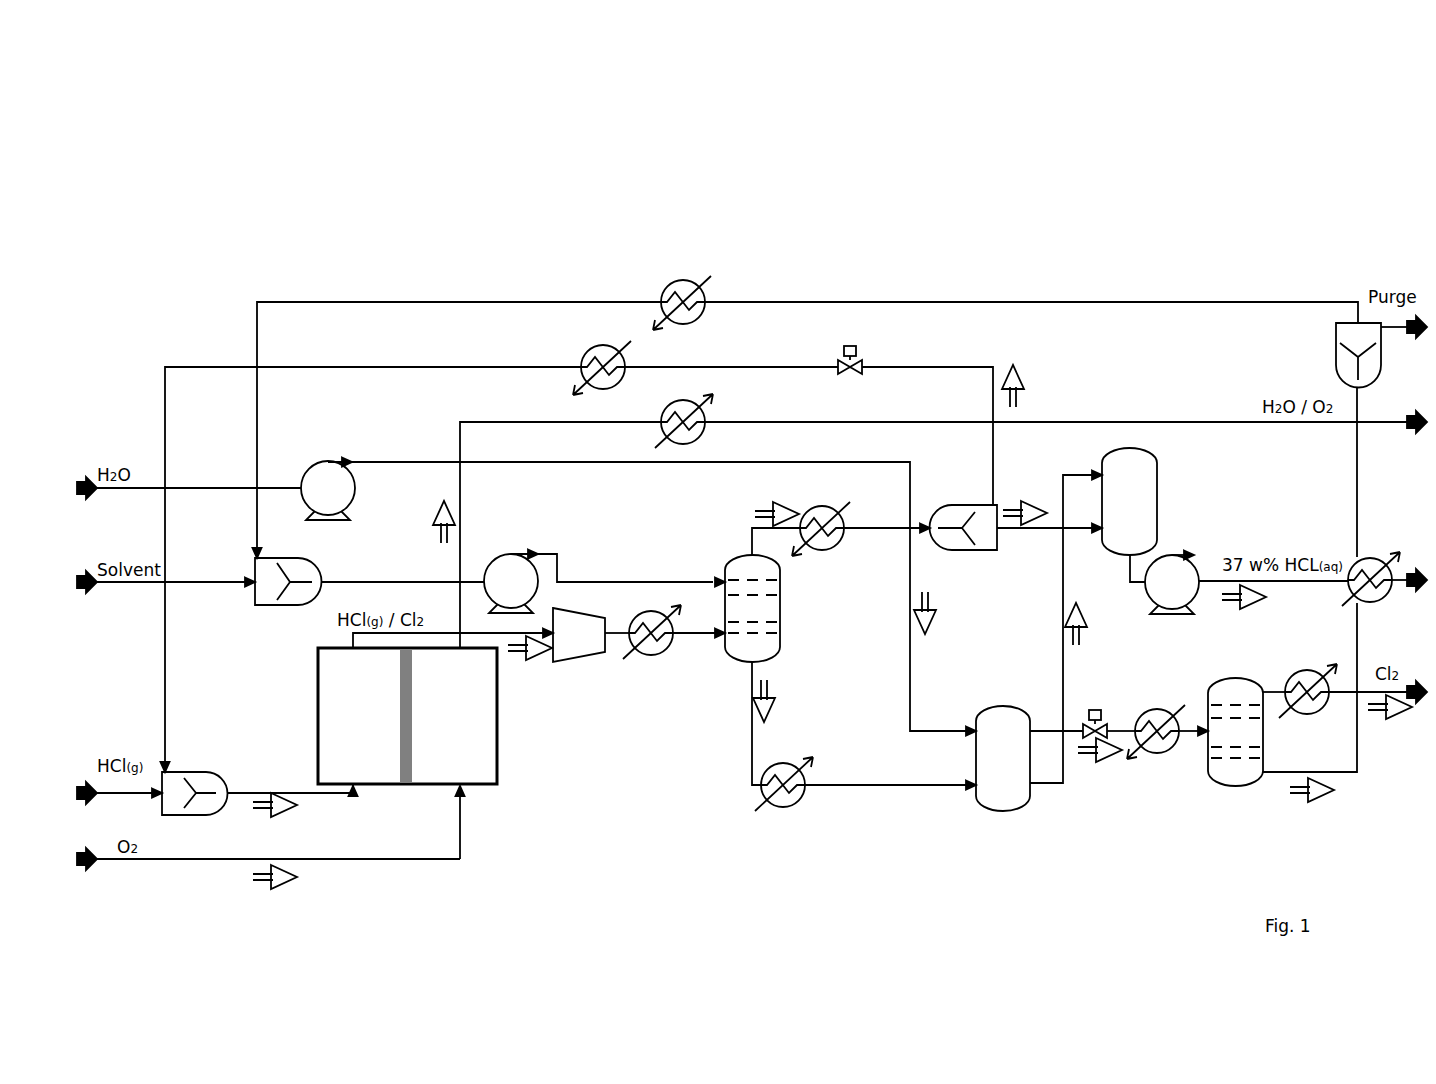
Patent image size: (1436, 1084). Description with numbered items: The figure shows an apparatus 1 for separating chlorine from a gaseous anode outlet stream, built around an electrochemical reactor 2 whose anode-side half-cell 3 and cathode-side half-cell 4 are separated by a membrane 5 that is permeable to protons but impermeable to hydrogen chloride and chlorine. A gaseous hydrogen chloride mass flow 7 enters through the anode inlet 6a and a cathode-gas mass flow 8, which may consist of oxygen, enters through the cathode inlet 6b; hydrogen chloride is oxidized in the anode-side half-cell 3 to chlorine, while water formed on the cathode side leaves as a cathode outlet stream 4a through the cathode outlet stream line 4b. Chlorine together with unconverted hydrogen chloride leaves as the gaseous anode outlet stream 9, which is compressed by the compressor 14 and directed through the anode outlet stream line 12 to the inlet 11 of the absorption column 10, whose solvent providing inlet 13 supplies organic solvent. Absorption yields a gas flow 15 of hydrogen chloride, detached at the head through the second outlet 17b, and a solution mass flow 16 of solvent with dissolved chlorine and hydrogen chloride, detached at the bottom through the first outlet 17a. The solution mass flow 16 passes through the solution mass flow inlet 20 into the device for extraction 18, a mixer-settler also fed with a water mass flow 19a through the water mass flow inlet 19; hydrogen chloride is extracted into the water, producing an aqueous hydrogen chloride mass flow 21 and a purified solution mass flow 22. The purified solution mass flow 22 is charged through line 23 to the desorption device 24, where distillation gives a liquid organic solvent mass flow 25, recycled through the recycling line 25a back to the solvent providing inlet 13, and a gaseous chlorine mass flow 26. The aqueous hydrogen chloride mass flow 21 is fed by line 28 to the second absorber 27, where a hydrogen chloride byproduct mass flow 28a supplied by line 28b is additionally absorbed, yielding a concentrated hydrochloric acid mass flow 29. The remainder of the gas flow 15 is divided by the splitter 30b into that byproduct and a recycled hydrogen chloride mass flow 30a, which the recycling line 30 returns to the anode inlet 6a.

The apparatus 1 is at (1138, 150).
The electrochemical reactor 2 is at (530, 785).
The anode-side half-cell 3 is at (360, 716).
The cathode-side half-cell 4 is at (453, 716).
The cathode outlet stream 4a is at (429, 523).
The cathode outlet stream line 4b is at (460, 488).
The membrane 5 is at (408, 784).
The anode inlet 6a is at (354, 792).
The cathode inlet 6b is at (464, 792).
The gaseous hydrogen chloride mass flow 7 is at (187, 803).
The cathode-gas mass flow 8 is at (268, 876).
The gaseous anode outlet stream 9 is at (530, 657).
The absorption column 10 is at (752, 608).
The inlet 11 is at (718, 640).
The anode outlet stream line 12 is at (445, 632).
The solvent providing inlet 13 is at (722, 580).
The compressor 14 is at (579, 635).
The gas flow of hydrogen chloride 15 is at (777, 506).
The solution mass flow 16 is at (779, 701).
The first outlet 17a is at (775, 660).
The second outlet 17b is at (755, 551).
The device for extraction 18 is at (1003, 758).
The water mass flow inlet 19 is at (973, 730).
The water mass flow 19a is at (945, 613).
The solution mass flow inlet 20 is at (975, 788).
The aqueous hydrogen chloride mass flow 21 is at (1072, 627).
The purified solution mass flow 22 is at (1100, 761).
The line 23 is at (1073, 730).
The desorption device 24 is at (1235, 732).
The organic solvent mass flow 25 is at (1312, 798).
The recycling line 25a is at (257, 522).
The gaseous chlorine mass flow 26 is at (1345, 700).
The second absorber 27 is at (1129, 501).
The line 28 is at (1061, 586).
The hydrogen chloride byproduct mass flow 28a is at (1025, 504).
The line 28b is at (1012, 530).
The concentrated hydrochloric acid mass flow 29 is at (1313, 592).
The recycling line 30 is at (165, 652).
The recycled hydrogen chloride mass flow 30a is at (1032, 386).
The splitter 30b is at (962, 505).